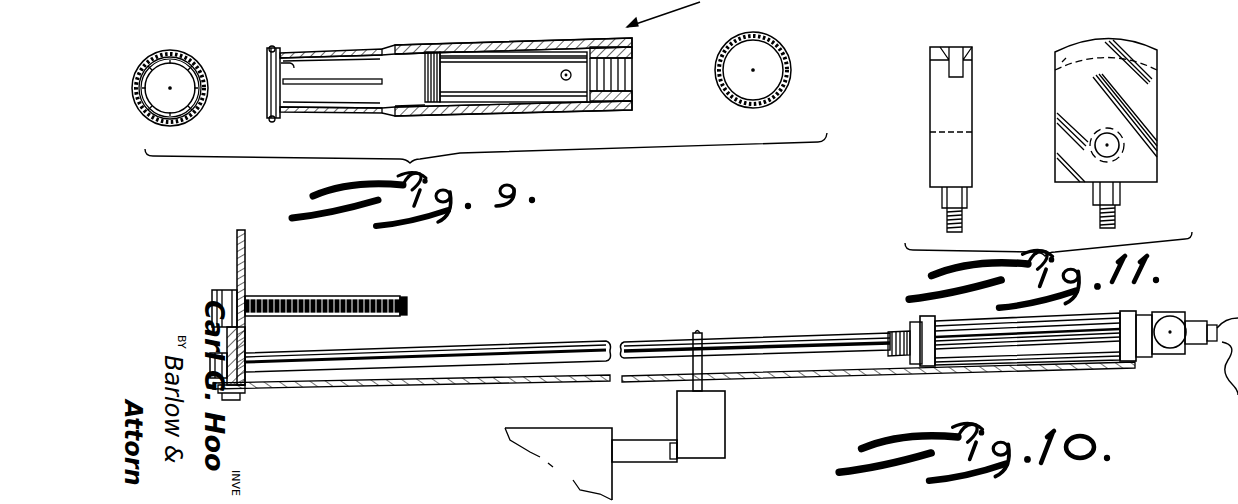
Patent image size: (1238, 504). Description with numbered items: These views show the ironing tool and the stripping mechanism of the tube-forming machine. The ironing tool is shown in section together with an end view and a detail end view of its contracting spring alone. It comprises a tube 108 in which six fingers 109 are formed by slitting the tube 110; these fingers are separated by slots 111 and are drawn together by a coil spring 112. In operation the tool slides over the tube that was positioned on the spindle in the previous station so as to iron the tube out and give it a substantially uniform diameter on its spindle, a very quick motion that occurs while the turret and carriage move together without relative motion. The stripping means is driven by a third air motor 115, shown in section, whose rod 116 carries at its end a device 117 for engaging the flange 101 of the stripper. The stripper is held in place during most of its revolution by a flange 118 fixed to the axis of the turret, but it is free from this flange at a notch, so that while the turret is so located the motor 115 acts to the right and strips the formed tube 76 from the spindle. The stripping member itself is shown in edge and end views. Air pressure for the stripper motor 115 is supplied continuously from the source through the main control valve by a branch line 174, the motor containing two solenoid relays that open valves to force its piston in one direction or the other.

In FIG. 9, the tube 108 is at (512, 43).
In FIG. 9, the fingers 109 is at (177, 125).
In FIG. 9, the tube 110 is at (407, 63).
In FIG. 9, the slots 111 is at (190, 118).
In FIG. 9, the coil spring 112 is at (177, 52).
In FIG. 11, the device 117 is at (1148, 104).
In FIG. 10, the device 117 is at (248, 346).
In FIG. 10, the flange 118 is at (247, 258).
In FIG. 10, the flange of the stripper 101 is at (235, 300).
In FIG. 10, the tube 76 is at (348, 318).
In FIG. 10, the rod 116 is at (545, 345).
In FIG. 10, the third motor 115 is at (1085, 372).
In FIG. 10, the branch line 174 is at (1221, 366).